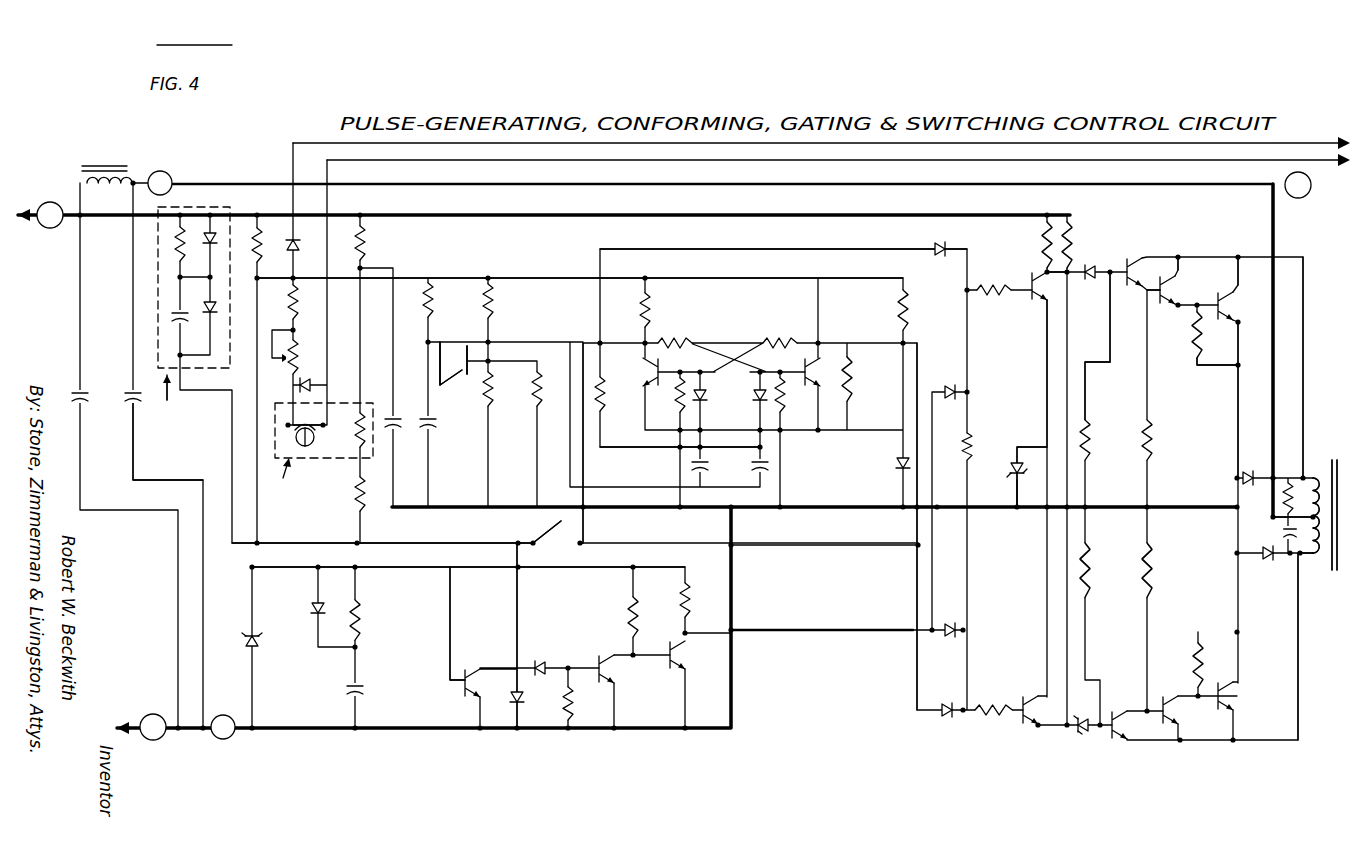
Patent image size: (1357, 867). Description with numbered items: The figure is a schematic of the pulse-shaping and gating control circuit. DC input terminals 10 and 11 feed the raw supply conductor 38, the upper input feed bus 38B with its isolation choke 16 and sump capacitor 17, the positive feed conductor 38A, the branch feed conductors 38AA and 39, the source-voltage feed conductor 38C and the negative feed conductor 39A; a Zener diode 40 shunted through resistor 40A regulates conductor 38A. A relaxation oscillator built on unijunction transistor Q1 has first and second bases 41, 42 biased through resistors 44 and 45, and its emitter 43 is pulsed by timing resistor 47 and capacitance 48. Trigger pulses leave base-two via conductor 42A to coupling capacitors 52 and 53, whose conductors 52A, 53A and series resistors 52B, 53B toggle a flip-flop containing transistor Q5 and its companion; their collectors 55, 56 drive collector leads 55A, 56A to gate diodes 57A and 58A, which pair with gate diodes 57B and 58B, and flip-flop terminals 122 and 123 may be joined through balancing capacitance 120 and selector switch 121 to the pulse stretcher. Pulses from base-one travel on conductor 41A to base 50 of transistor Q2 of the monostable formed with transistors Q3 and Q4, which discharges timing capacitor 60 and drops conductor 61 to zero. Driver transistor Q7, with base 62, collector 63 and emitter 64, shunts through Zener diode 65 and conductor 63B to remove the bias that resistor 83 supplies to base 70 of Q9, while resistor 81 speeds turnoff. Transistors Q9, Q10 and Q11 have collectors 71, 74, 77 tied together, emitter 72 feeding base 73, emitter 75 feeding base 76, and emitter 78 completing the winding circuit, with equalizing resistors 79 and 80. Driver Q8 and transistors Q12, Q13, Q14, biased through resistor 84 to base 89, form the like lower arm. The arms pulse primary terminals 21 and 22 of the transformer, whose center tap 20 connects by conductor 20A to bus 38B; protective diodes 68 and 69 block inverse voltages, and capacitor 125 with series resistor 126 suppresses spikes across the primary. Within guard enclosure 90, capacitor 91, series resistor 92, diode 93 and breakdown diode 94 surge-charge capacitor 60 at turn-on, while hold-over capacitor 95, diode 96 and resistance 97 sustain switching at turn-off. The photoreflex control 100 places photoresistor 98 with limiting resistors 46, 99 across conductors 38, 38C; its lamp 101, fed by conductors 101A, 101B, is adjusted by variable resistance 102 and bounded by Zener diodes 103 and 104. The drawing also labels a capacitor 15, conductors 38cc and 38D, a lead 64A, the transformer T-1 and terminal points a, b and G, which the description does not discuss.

The DC input terminal 10 is at (50, 215).
The DC input terminal 11 is at (154, 727).
The capacitor 15 is at (76, 392).
The isolation choke 16 is at (120, 160).
The sump capacitor 17 is at (129, 392).
The center-tap terminal 20 is at (1238, 518).
The conductor 20A is at (1274, 250).
The primary terminal 21 is at (1306, 472).
The primary terminal 22 is at (1306, 560).
The bus conductor 38 is at (132, 213).
The positive feed conductor 38A is at (522, 278).
The branch feed conductor 38AA is at (272, 566).
The upper input feed bus 38B is at (723, 340).
The source-voltage feed conductor 38C is at (134, 437).
The supply line 38cc is at (790, 548).
The supply line 38D is at (517, 627).
The branch feed conductor 39 is at (425, 732).
The negative feed conductor 39A is at (447, 506).
The Zener diode 40 is at (262, 640).
The resistor 40A is at (276, 205).
The first base electrode 41 is at (419, 413).
The conductor 41A is at (448, 542).
The second base electrode 42 is at (466, 352).
The conductor 42A is at (650, 490).
The unijunction emitter 43 is at (444, 366).
The resistor 44 is at (491, 398).
The resistor 45 is at (498, 305).
The limiting resistor 46 is at (368, 252).
The resistor 47 is at (440, 302).
The capacitance 48 is at (431, 429).
The base 50 is at (452, 683).
The coupling capacitor 52 is at (704, 467).
The conductor 52A is at (662, 452).
The series resistor 52B is at (620, 410).
The coupling capacitor 53 is at (770, 470).
The conductor 53A is at (820, 447).
The series resistor 53B is at (850, 395).
The collector 55 is at (660, 350).
The collector lead 55A is at (840, 259).
The collector 56 is at (793, 350).
The collector lead 56A is at (943, 337).
The gate diode 57A is at (926, 248).
The gate diode 57B is at (950, 370).
The gate diode 58A is at (950, 720).
The gate diode 58B is at (958, 624).
The capacitor 60 is at (542, 692).
The conductor 61 is at (820, 633).
The base 62 is at (1015, 285).
The collector 63 is at (1043, 270).
The conductor 63B is at (1017, 495).
The emitter 64 is at (1040, 304).
The lead 64A is at (1044, 407).
The Zener diode 65 is at (1015, 460).
The protective diode 68 is at (1245, 470).
The protective diode 69 is at (1270, 566).
The base 70 is at (1088, 263).
The collector 71 is at (1130, 252).
The emitter 72 is at (1138, 308).
The base 73 is at (1112, 382).
The collector 74 is at (1180, 256).
The emitter 75 is at (1180, 335).
The base 76 is at (1217, 354).
The collector 77 is at (1250, 256).
The emitter 78 is at (1251, 344).
The current-equalizing resistor 79 is at (1210, 421).
The current-equalizing resistor 80 is at (1153, 438).
The resistor 81 is at (1097, 440).
The resistor 83 is at (1042, 243).
The resistor 84 is at (1070, 240).
The base 89 is at (1107, 705).
The guard network 90 is at (169, 403).
The capacitor 91 is at (174, 317).
The series resistor 92 is at (174, 245).
The diode 93 is at (216, 236).
The breakdown diode 94 is at (200, 297).
The hold-over capacitance 95 is at (360, 688).
The diode 96 is at (313, 605).
The series resistance 97 is at (362, 617).
The photoresponsive resistance 98 is at (352, 442).
The limiting resistor 99 is at (354, 500).
The photoreflex pulse width control means 100 is at (274, 482).
The light source 101 is at (328, 387).
The conductor 101A is at (312, 143).
The conductor 101B is at (436, 161).
The variable resistance means 102 is at (300, 334).
The protective Zener diode 103 is at (308, 366).
The second Zener diode 104 is at (306, 256).
The balancing capacitance 120 is at (572, 549).
The selector switch means 121 is at (584, 533).
The flip-flop terminal 122 is at (584, 338).
The flip-flop terminal 123 is at (848, 341).
The capacitor 125 is at (1284, 533).
The series resistor 126 is at (1267, 500).
The unijunction transistor Q1 is at (491, 360).
The transistor Q2 is at (480, 683).
The transistor Q3 is at (624, 650).
The transistor Q4 is at (692, 628).
The flip-flop transistor Q5 is at (634, 372).
The driving transistor Q7 is at (1042, 286).
The driver transistor Q8 is at (1042, 738).
The power-switching transistor Q9 is at (1139, 272).
The power-switching transistor Q10 is at (1182, 290).
The power-switching transistor Q11 is at (1240, 306).
The power-switching transistor Q12 is at (1118, 746).
The power-switching transistor Q13 is at (1178, 748).
The power-switching transistor Q14 is at (1240, 748).
The transformer T-1 is at (1333, 457).
The terminal a is at (160, 183).
The terminal b is at (223, 727).
The terminal G is at (1319, 192).